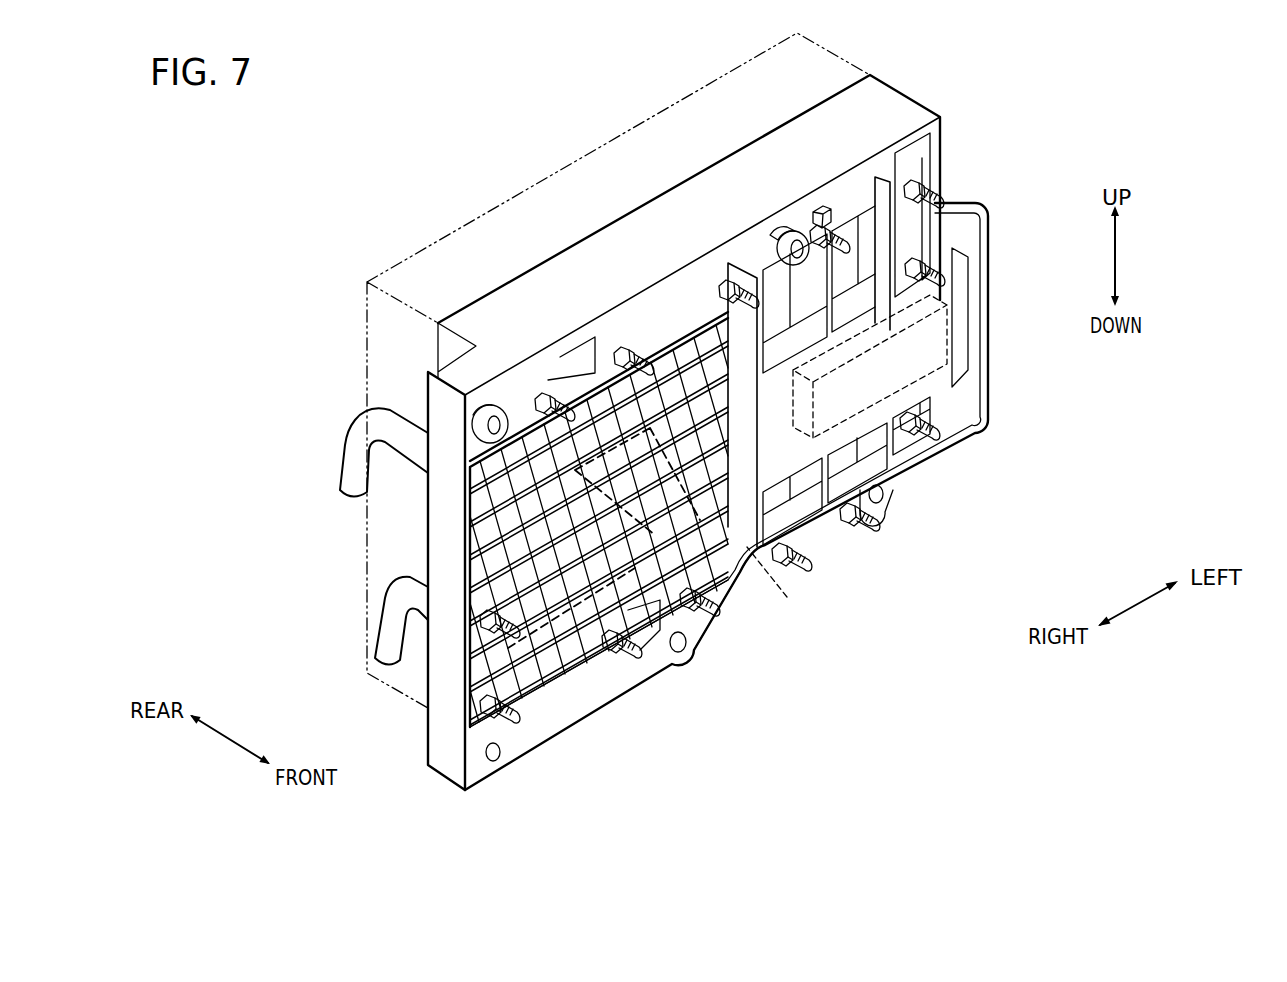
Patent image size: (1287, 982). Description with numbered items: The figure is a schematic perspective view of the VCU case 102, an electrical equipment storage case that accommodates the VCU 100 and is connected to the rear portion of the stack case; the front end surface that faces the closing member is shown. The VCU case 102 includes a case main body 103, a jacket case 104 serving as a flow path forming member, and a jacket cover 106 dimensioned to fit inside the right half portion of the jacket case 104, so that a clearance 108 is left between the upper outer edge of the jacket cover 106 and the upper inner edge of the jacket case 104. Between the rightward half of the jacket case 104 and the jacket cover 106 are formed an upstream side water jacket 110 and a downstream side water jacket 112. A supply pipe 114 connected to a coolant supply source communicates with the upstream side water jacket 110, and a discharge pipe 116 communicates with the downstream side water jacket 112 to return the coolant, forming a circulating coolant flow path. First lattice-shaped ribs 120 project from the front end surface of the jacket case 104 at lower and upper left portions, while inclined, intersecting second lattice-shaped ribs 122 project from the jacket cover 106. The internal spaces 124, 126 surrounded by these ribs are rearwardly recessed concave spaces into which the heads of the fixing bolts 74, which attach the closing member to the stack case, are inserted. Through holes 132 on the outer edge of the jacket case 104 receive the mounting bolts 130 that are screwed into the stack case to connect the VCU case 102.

The fixing bolt 74 is at (893, 283).
The VCU 100 is at (932, 342).
The VCU case 102 is at (460, 97).
The case main body 103 is at (438, 258).
The jacket case 104 is at (873, 96).
The jacket cover 106 is at (785, 584).
The clearance 108 is at (548, 378).
The upstream side water jacket 110 is at (470, 508).
The downstream side water jacket 112 is at (552, 600).
The supply pipe 114 is at (348, 480).
The discharge pipe 116 is at (383, 643).
The first lattice-shaped ribs 120 is at (875, 168).
The second lattice-shaped ribs 122 is at (692, 636).
The internal space 124 is at (932, 414).
The internal space 126 is at (632, 640).
The mounting bolt 130 is at (692, 656).
The through hole 132 is at (887, 498).